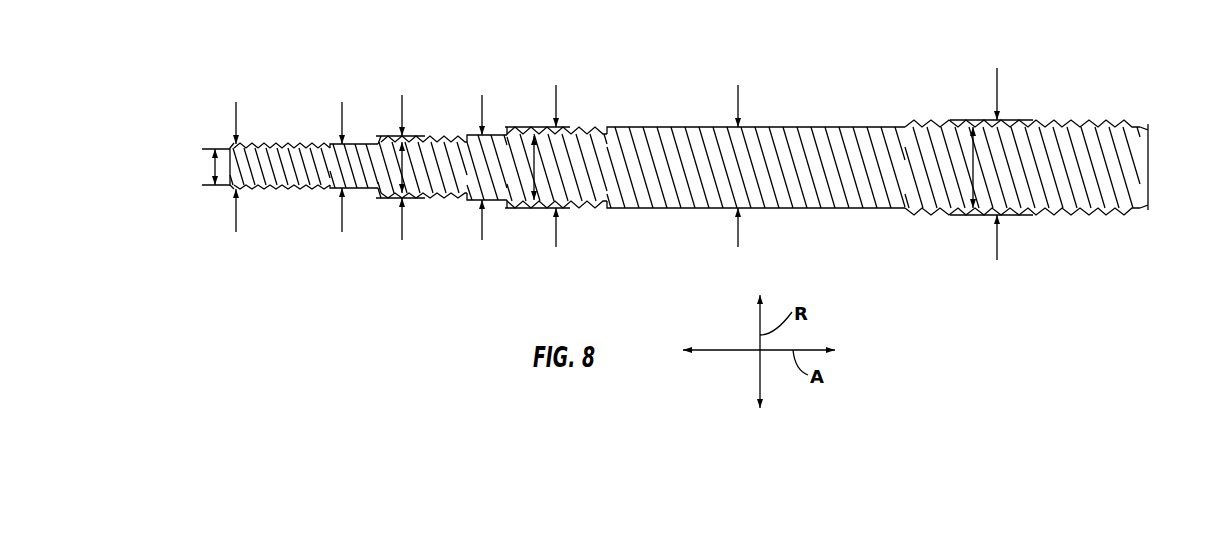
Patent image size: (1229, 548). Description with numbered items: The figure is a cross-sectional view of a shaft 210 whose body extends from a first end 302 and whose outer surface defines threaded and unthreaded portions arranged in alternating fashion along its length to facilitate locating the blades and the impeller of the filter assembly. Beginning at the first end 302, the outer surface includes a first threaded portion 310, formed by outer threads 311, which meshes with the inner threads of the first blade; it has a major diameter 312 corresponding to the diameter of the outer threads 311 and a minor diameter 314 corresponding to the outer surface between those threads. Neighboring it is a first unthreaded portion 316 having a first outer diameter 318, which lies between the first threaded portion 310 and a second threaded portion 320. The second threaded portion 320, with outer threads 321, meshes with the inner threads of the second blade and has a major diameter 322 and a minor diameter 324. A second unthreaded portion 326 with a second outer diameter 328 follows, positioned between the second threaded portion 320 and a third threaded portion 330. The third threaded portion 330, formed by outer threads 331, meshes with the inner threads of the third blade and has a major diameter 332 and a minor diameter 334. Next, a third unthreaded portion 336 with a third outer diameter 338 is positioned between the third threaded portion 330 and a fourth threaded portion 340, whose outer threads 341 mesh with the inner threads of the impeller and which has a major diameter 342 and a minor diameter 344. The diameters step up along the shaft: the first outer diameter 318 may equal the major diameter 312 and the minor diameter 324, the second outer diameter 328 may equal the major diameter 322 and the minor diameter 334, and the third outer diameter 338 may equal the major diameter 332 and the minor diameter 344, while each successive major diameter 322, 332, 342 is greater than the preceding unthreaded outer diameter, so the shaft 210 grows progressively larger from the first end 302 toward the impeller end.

The shaft 210 is at (665, 68).
The first end 302 is at (180, 166).
The first threaded portion 310 is at (287, 128).
The outer threads 311 is at (302, 143).
The major diameter 312 is at (235, 108).
The minor diameter 314 is at (212, 170).
The first unthreaded portion 316 is at (356, 124).
The first outer diameter 318 is at (340, 218).
The second threaded portion 320 is at (378, 112).
The outer threads 321 is at (442, 135).
The major diameter 322 is at (403, 222).
The minor diameter 324 is at (400, 163).
The second unthreaded portion 326 is at (501, 109).
The second outer diameter 328 is at (482, 220).
The third threaded portion 330 is at (575, 109).
The outer threads 331 is at (592, 130).
The major diameter 332 is at (557, 228).
The minor diameter 334 is at (534, 168).
The third unthreaded portion 336 is at (703, 109).
The third outer diameter 338 is at (742, 228).
The fourth threaded portion 340 is at (974, 104).
The outer threads 341 is at (1043, 120).
The major diameter 342 is at (998, 247).
The minor diameter 344 is at (968, 167).